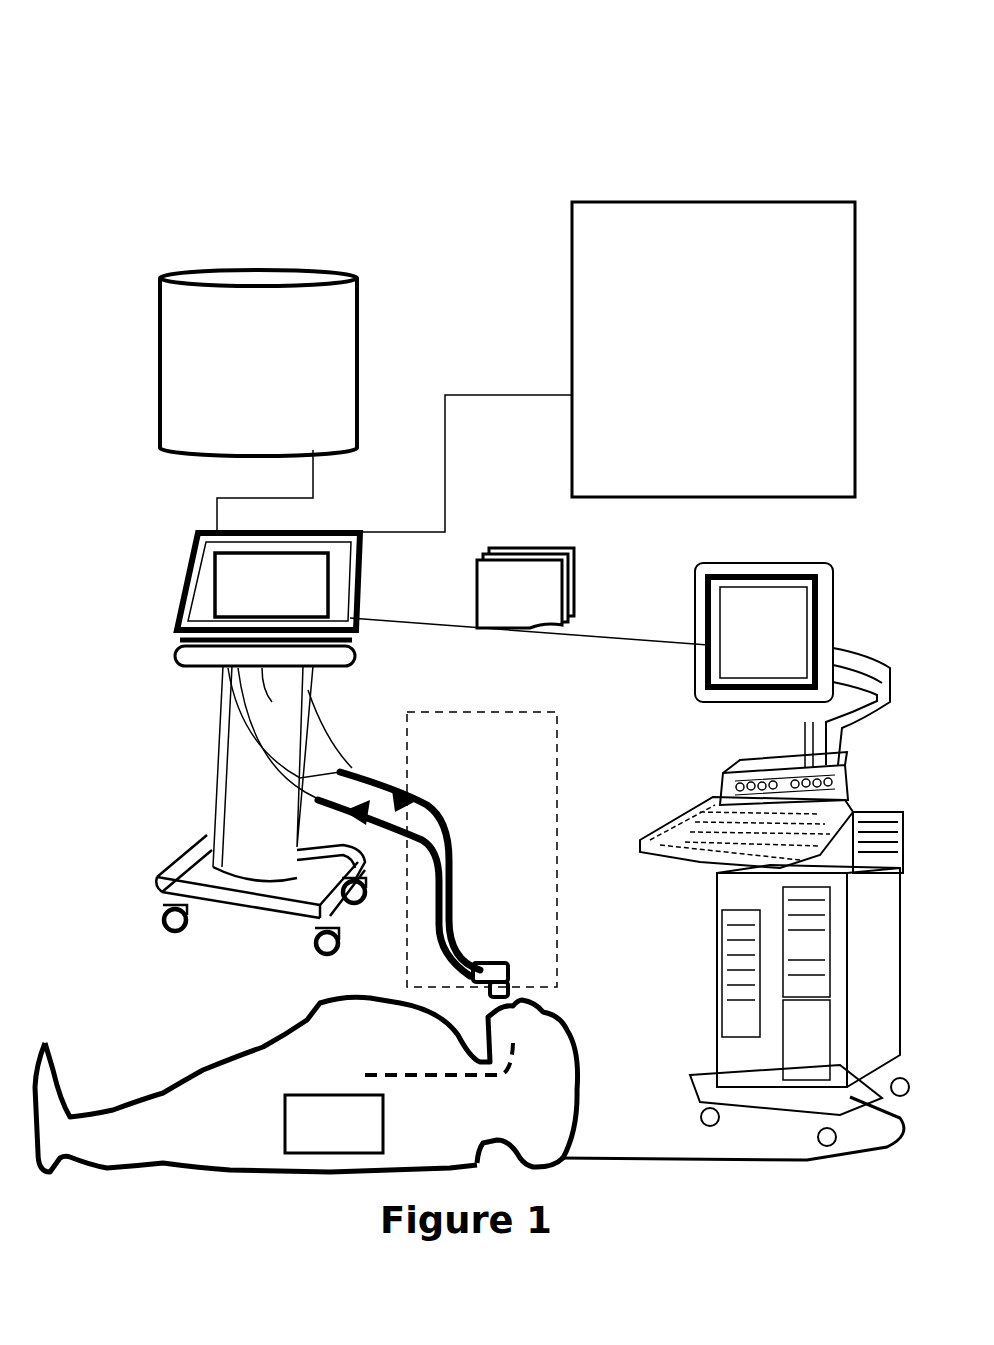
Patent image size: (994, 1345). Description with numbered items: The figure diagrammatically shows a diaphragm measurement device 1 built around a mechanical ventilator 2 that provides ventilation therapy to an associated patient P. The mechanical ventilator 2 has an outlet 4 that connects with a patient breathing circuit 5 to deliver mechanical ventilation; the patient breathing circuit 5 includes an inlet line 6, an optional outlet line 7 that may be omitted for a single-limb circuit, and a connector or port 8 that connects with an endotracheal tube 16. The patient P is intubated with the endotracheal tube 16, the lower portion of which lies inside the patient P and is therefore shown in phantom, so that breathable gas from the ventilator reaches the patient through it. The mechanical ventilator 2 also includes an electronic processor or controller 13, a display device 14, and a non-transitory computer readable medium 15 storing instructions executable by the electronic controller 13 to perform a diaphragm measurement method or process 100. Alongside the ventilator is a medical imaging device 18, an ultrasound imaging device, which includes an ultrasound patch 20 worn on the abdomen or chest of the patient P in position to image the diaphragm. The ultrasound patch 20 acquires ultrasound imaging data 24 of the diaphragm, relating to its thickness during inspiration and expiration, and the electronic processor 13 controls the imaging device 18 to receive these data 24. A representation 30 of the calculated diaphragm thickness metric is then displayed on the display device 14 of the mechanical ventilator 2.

The diaphragm measurement device 1 is at (217, 143).
The mechanical ventilator 2 is at (143, 672).
The outlet 4 is at (353, 617).
The patient breathing circuit 5 is at (433, 713).
The inlet line 6 is at (438, 860).
The outlet line 7 is at (430, 860).
The connector or port 8 is at (485, 962).
The electronic processor or controller 13 is at (253, 657).
The display device 14 is at (184, 580).
The non-transitory computer readable medium 15 is at (358, 275).
The endotracheal tube 16 is at (522, 1049).
The medical imaging device 18 is at (658, 604).
The ultrasound patch 20 is at (357, 1147).
The ultrasound imaging data 24 is at (543, 620).
The representation of the calculated diaphragm thickness metric 30 is at (287, 601).
The diaphragm measurement method or process 100 is at (740, 488).
The patient P is at (303, 1018).